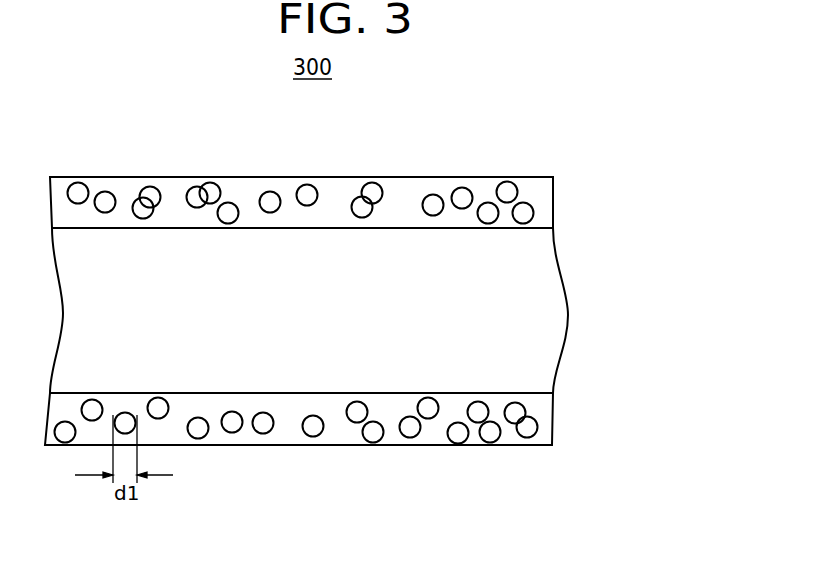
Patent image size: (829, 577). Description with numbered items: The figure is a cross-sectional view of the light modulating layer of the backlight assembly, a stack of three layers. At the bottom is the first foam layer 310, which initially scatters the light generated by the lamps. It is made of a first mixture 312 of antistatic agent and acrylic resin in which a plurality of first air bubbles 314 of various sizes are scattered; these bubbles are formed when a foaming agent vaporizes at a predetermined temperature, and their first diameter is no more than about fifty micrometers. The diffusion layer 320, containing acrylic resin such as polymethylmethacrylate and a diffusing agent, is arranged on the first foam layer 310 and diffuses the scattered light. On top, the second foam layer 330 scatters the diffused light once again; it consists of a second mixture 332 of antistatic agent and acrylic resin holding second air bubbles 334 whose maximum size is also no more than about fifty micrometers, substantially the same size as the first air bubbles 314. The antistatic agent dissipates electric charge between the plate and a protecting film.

The first foam layer 310 is at (378, 430).
The first mixture 312 is at (545, 412).
The first air bubbles 314 is at (538, 424).
The diffusion layer 320 is at (545, 315).
The second foam layer 330 is at (380, 211).
The second mixture 332 is at (545, 188).
The second air bubbles 334 is at (533, 212).